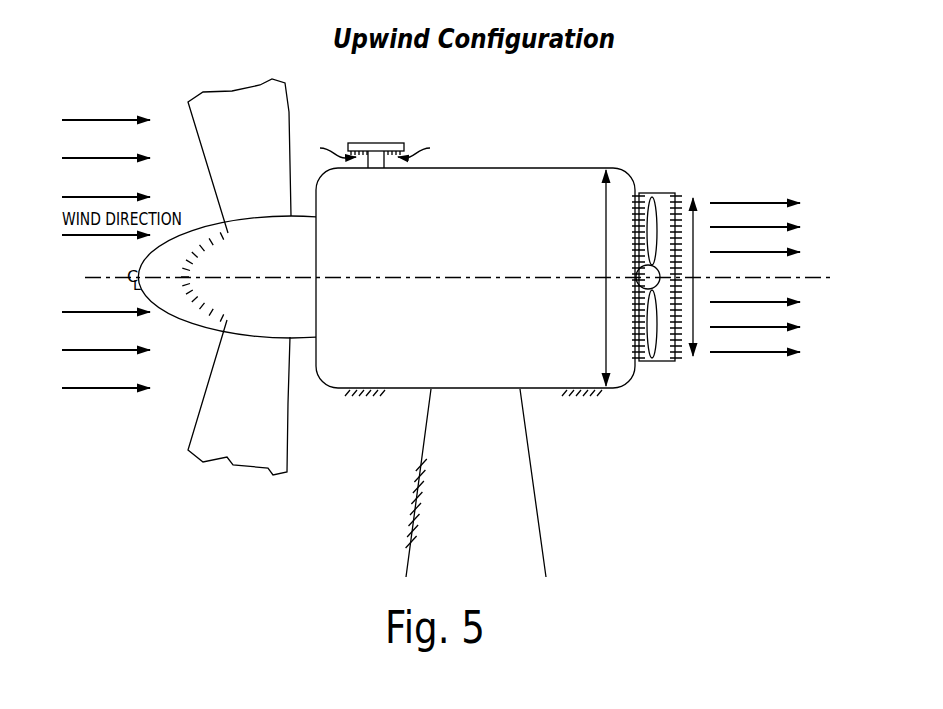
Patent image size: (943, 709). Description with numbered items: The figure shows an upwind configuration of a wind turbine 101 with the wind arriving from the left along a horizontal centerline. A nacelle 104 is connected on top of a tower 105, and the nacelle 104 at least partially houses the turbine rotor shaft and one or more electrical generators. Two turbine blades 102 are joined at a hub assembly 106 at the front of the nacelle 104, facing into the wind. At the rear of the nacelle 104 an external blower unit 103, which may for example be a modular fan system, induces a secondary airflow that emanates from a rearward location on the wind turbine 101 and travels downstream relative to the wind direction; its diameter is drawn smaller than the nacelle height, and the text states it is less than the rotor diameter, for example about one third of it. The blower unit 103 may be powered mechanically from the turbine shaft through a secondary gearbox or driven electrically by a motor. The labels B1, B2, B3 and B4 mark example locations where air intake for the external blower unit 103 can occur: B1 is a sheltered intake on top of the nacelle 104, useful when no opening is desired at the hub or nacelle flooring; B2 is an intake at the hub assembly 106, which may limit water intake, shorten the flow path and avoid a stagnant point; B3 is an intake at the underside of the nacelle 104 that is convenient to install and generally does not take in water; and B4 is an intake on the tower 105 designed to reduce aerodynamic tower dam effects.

The wind turbine 101 is at (517, 290).
The turbine blades 102 is at (206, 497).
The external blower unit 103 is at (660, 193).
The nacelle 104 is at (537, 390).
The tower 105 is at (435, 485).
The hub assembly 106 is at (227, 290).
The air intake location above the nacelle B1 is at (375, 144).
The hub air intake location B2 is at (180, 337).
The nacelle underside air intake location B3 is at (473, 381).
The tower air intake location B4 is at (403, 503).